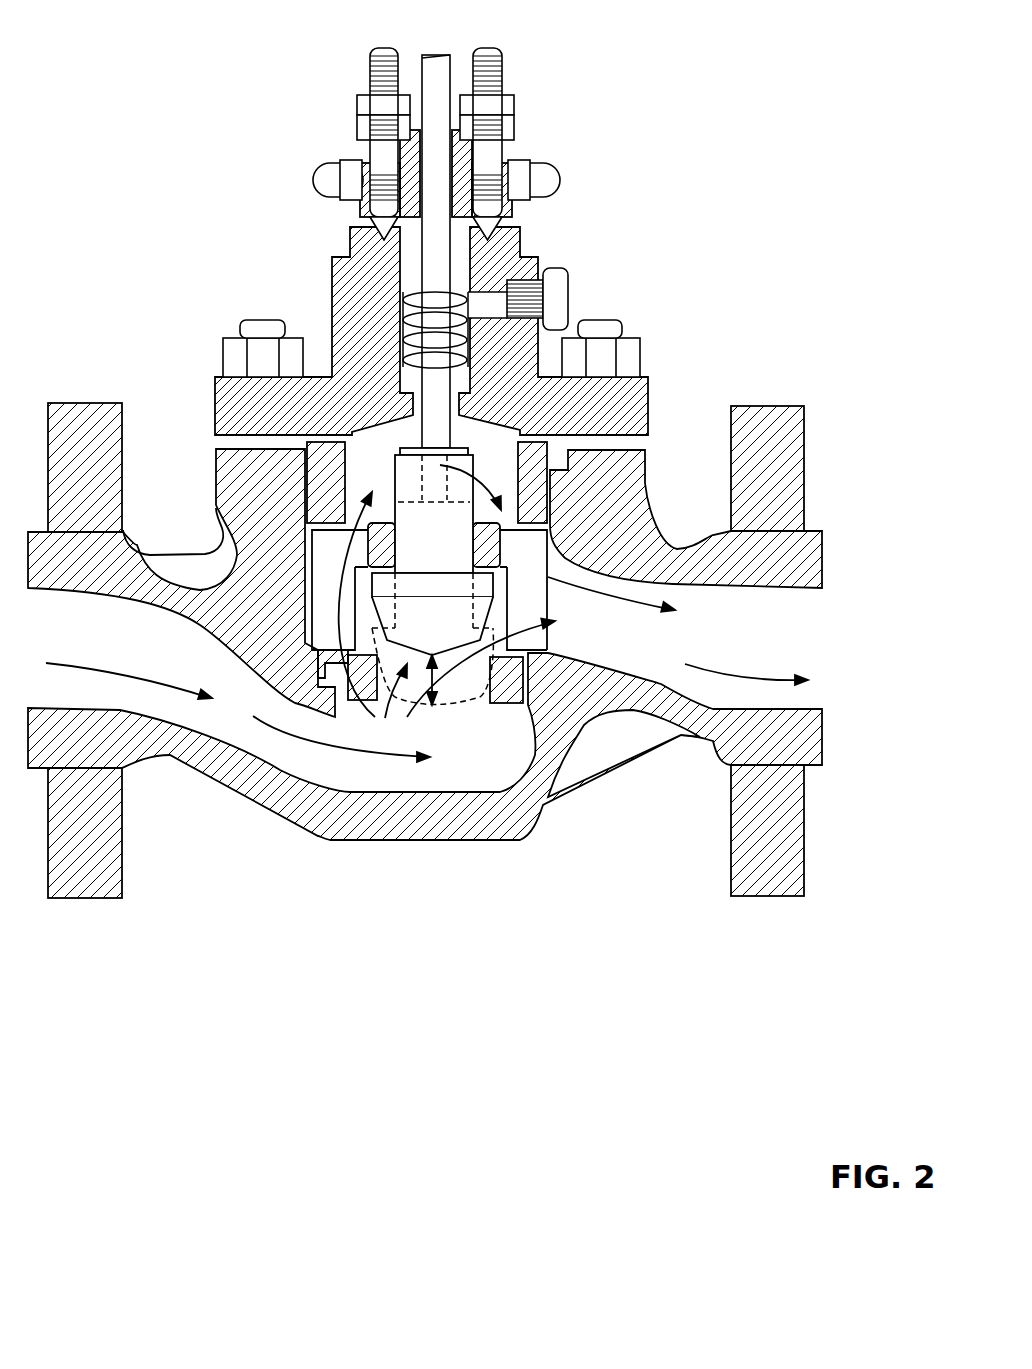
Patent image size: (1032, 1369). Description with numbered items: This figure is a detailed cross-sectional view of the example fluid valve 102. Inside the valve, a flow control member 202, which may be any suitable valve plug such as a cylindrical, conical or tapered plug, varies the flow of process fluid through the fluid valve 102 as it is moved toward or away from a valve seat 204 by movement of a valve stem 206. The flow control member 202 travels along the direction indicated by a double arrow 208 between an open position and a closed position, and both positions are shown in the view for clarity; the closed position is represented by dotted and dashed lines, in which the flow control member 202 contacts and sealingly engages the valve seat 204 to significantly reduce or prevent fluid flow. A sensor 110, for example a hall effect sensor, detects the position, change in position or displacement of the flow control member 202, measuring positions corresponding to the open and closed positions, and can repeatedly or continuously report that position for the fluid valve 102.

The fluid valve 102 is at (213, 270).
The sensor 110 is at (345, 290).
The flow control member 202 is at (340, 602).
The valve seat 204 is at (513, 646).
The valve stem 206 is at (455, 62).
The double arrow 208 is at (428, 680).